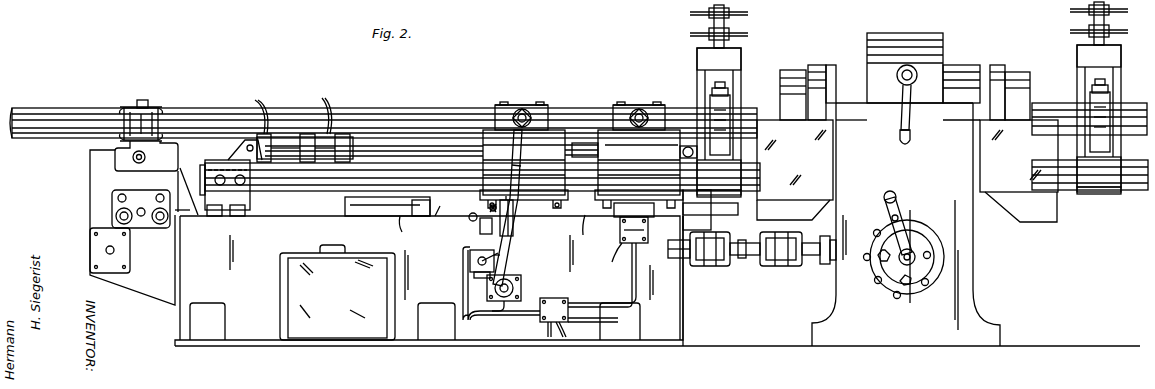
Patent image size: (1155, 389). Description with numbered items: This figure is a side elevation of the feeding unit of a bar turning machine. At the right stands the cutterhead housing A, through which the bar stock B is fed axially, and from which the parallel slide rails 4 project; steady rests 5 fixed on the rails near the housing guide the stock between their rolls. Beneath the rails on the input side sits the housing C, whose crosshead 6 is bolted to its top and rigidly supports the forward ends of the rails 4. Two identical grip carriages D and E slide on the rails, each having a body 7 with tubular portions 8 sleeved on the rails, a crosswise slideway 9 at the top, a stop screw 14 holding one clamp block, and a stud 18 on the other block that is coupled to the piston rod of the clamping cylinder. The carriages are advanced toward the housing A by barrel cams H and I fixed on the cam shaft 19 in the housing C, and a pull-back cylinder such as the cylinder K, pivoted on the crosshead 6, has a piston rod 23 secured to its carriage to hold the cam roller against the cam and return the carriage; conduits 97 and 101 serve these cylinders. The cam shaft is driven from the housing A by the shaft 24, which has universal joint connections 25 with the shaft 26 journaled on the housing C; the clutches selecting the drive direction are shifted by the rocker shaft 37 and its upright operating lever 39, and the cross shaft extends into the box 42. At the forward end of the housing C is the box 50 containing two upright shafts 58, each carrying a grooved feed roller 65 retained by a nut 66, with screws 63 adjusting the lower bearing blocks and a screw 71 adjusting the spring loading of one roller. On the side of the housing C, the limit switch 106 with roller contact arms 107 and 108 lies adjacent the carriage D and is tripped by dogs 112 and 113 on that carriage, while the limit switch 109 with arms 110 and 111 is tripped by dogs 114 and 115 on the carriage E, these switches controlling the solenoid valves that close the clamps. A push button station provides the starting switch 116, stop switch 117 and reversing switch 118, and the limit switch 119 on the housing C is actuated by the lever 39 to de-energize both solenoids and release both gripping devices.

The cutterhead housing A is at (956, 57).
The bar stock B is at (70, 110).
The housing C is at (186, 275).
The grip carriage D is at (533, 102).
The grip carriage E is at (646, 104).
The barrel cam H is at (431, 228).
The barrel cam I is at (586, 233).
The hydraulic cylinder K is at (283, 136).
The slide rails 4 is at (380, 196).
The steady rest 5 is at (749, 51).
The crosshead 6 is at (222, 168).
The carriage body 7 is at (500, 145).
The tubular portions 8 is at (666, 175).
The slideway 9 is at (548, 108).
The stop screw 14 is at (520, 109).
The stud 18 is at (546, 172).
The cam shaft 19 is at (400, 236).
The piston rod 23 is at (390, 146).
The shaft 24 is at (824, 264).
The universal joint connections 25 is at (786, 264).
The shaft 26 is at (680, 252).
The rocker shaft 37 is at (522, 288).
The operating lever 39 is at (507, 267).
The box 42 is at (280, 283).
The box 50 is at (92, 188).
The upright shaft 58 is at (143, 106).
The screw 63 is at (118, 216).
The feed roller 65 is at (166, 120).
The nut 66 is at (160, 108).
The screw 71 is at (132, 157).
The conduit 97 is at (330, 100).
The return conduit 101 is at (258, 100).
The limit switch 106 is at (481, 226).
The roller contact arm 107 is at (470, 220).
The roller contact arm 108 is at (520, 212).
The limit switch 109 is at (606, 261).
The roller contact arm 110 is at (620, 230).
The roller contact arm 111 is at (643, 221).
The dog 112 is at (488, 209).
The dog 113 is at (535, 228).
The dog 114 is at (622, 205).
The dog 115 is at (690, 212).
The starting switch 116 is at (470, 268).
The stop switch 117 is at (470, 258).
The reversing switch 118 is at (476, 277).
The limit switch 119 is at (566, 300).